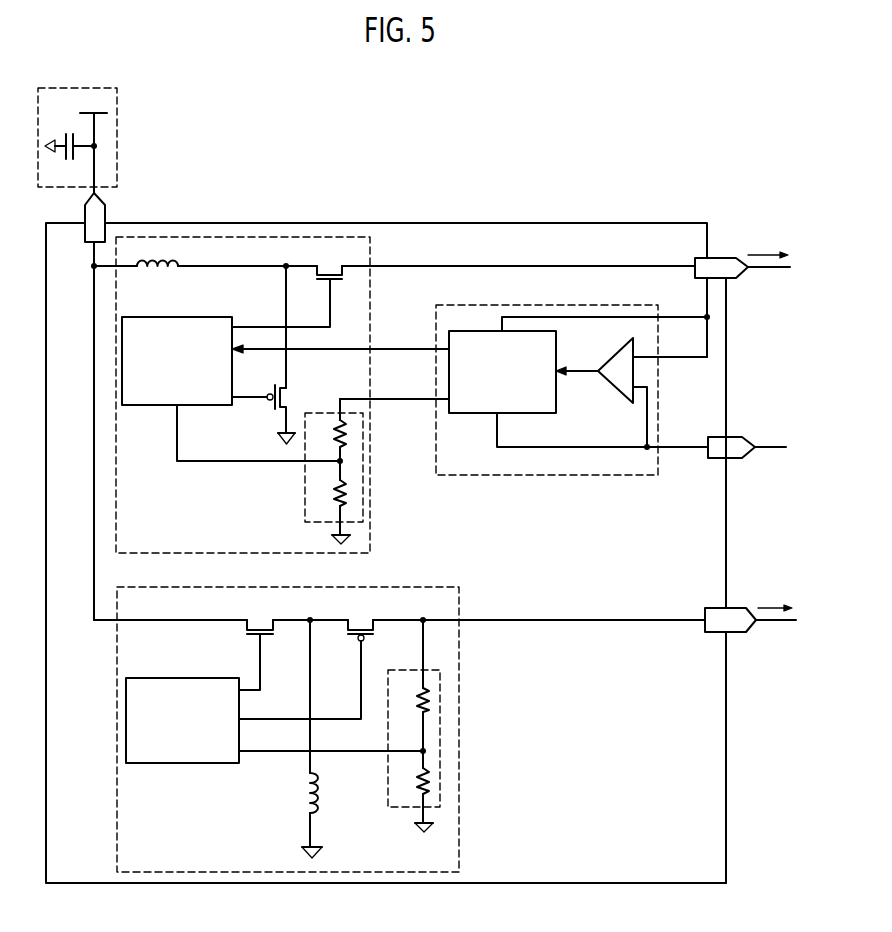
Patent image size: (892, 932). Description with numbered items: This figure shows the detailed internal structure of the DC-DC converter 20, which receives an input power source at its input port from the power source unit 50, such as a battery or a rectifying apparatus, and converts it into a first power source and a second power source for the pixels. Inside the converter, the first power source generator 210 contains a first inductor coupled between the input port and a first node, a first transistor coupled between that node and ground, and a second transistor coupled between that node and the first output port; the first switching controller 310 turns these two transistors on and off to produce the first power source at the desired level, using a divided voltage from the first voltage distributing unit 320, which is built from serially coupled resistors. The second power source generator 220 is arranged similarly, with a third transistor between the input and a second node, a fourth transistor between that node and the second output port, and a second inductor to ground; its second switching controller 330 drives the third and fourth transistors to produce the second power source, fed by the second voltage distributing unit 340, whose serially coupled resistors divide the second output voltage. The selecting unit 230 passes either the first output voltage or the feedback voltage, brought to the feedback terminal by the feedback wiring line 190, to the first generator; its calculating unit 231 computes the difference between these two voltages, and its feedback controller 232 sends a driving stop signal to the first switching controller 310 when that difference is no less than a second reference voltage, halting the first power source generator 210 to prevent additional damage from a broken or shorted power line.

The power source unit 50 is at (118, 138).
The DC-DC converter 20 is at (575, 223).
The feedback wiring line 190 is at (762, 447).
The first power source generator 210 is at (374, 395).
The first switching controller 310 is at (213, 316).
The first voltage distributing unit 320 is at (305, 507).
The selecting unit 230 is at (573, 418).
The calculating unit 231 is at (612, 387).
The feedback controller 232 is at (472, 413).
The second power source generator 220 is at (379, 729).
The second switching controller 330 is at (200, 763).
The second voltage distributing unit 340 is at (395, 807).